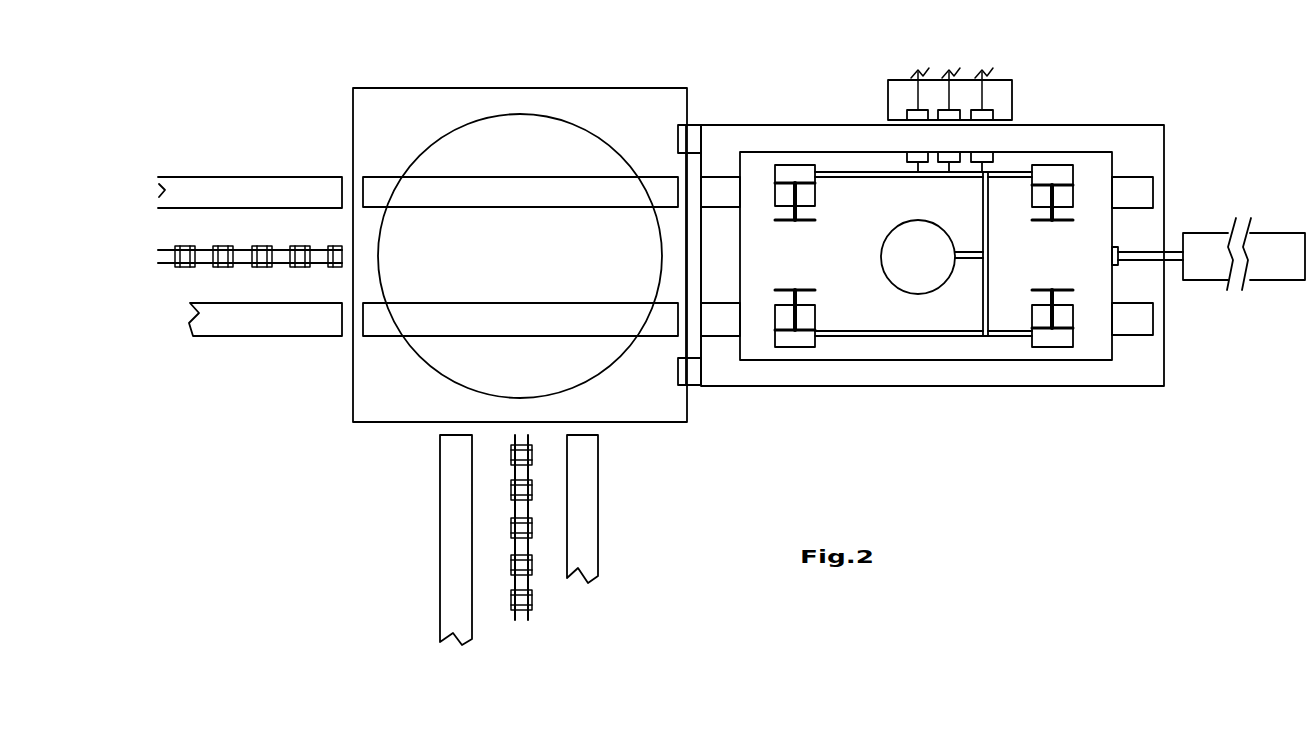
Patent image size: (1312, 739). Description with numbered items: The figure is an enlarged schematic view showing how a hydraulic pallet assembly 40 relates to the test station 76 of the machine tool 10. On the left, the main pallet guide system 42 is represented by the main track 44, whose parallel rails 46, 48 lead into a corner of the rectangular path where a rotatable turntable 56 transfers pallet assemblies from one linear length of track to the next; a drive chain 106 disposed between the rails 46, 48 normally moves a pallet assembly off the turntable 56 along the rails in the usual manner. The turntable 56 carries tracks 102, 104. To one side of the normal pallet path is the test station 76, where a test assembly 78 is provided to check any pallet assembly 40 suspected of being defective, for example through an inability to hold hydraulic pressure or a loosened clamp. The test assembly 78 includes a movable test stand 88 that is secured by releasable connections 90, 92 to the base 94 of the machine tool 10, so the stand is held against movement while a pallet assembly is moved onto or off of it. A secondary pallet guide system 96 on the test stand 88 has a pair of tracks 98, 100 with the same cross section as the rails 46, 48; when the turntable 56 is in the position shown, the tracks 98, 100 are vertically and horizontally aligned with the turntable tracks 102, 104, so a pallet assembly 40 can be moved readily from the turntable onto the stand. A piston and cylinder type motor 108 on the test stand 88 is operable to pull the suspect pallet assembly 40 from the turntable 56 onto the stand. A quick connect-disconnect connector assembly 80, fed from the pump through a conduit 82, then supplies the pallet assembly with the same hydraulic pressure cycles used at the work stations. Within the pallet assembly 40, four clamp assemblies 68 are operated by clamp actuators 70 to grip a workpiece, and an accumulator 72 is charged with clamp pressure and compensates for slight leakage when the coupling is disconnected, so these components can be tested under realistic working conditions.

The machine tool 10 is at (232, 90).
The hydraulic pallet assembly 40 is at (1101, 149).
The main pallet guide system 42 is at (222, 340).
The main track 44 is at (392, 615).
The rail 46 is at (263, 190).
The rail 48 is at (292, 320).
The turntable 56 is at (562, 114).
The clamp assembly 68 is at (802, 229).
The clamp actuator 70 is at (796, 165).
The accumulator 72 is at (918, 243).
The test station 76 is at (1064, 430).
The test assembly 78 is at (963, 390).
The quick connect-disconnect connector assembly 80 is at (1016, 80).
The conduit 82 is at (986, 75).
The test stand 88 is at (1130, 372).
The releasable connection 90 is at (692, 376).
The releasable connection 92 is at (692, 130).
The base 94 is at (632, 407).
The secondary pallet guide system 96 is at (1155, 176).
The track 98 is at (1140, 195).
The track 100 is at (1140, 320).
The track 102 is at (500, 196).
The track 104 is at (507, 318).
The drive chain 106 is at (240, 246).
The piston and cylinder type motor 108 is at (1270, 258).